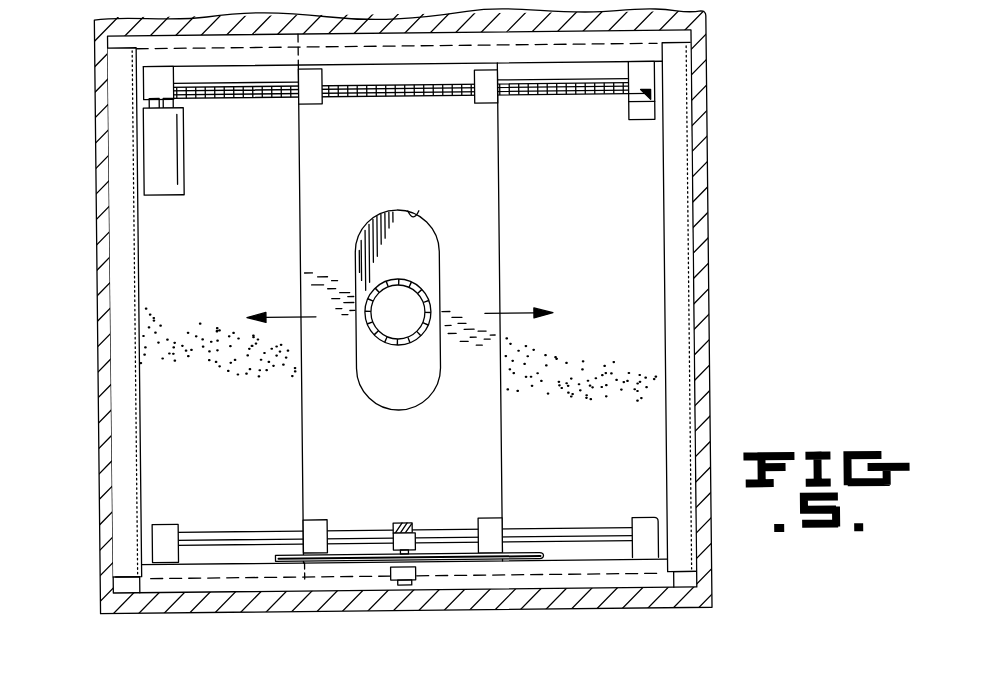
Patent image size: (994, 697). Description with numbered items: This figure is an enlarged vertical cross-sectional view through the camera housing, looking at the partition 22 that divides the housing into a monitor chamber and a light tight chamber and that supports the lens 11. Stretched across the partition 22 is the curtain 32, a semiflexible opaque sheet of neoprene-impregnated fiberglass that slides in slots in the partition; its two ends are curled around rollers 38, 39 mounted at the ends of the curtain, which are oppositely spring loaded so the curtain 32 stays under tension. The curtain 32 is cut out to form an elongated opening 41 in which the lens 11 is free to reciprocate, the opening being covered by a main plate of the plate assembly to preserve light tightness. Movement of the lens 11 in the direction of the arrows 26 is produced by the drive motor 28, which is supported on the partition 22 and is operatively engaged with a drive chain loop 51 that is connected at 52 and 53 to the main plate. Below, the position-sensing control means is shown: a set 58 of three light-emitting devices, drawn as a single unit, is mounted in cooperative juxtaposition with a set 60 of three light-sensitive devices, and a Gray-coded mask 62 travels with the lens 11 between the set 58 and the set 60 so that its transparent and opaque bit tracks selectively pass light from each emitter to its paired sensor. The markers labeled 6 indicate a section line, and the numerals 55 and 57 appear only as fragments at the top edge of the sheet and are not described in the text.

The partition 22 is at (690, 40).
The drive motor 28 is at (177, 155).
The drive chain loop 51 is at (240, 98).
The connection 52 is at (314, 100).
The connection 53 is at (482, 104).
The elongated opening 41 is at (418, 217).
The lens 11 is at (392, 292).
The curtain 32 is at (226, 396).
The roller 38 is at (126, 280).
The roller 39 is at (664, 275).
The arrows 26 is at (283, 313).
The set of light-emitting devices 58 is at (403, 522).
The set of light-sensitive devices 60 is at (388, 568).
The Gray-coded mask 62 is at (456, 555).
The section line for FIG. 6 is at (84, 69).
The partition 55 is at (447, 6).
The partition 57 is at (600, 9).